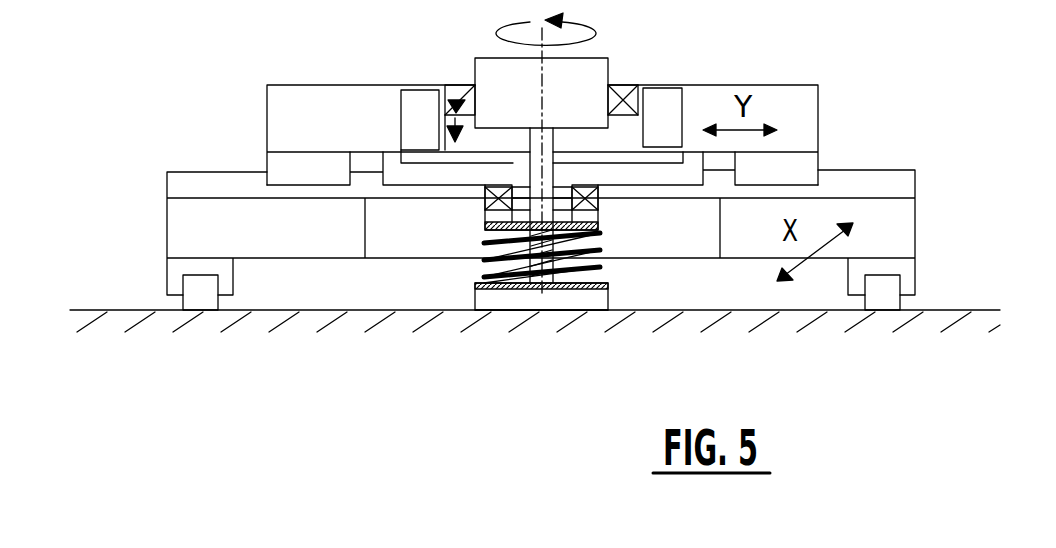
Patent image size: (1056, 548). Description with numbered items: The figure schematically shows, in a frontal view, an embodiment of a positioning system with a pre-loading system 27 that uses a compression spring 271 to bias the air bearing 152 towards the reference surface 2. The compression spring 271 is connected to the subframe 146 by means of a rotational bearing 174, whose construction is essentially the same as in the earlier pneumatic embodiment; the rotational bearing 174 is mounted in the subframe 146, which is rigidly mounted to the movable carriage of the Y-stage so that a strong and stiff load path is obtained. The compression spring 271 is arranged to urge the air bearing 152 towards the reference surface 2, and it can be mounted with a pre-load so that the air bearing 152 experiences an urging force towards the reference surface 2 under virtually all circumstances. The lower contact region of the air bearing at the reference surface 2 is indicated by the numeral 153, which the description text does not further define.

The reference surface 2 is at (958, 320).
The pre-loading system 27 is at (443, 291).
The subframe 146 is at (620, 177).
The air bearing 152 is at (513, 295).
The contact surface 153 is at (557, 312).
The rotational bearing 174 is at (490, 200).
The compression spring 271 is at (597, 247).